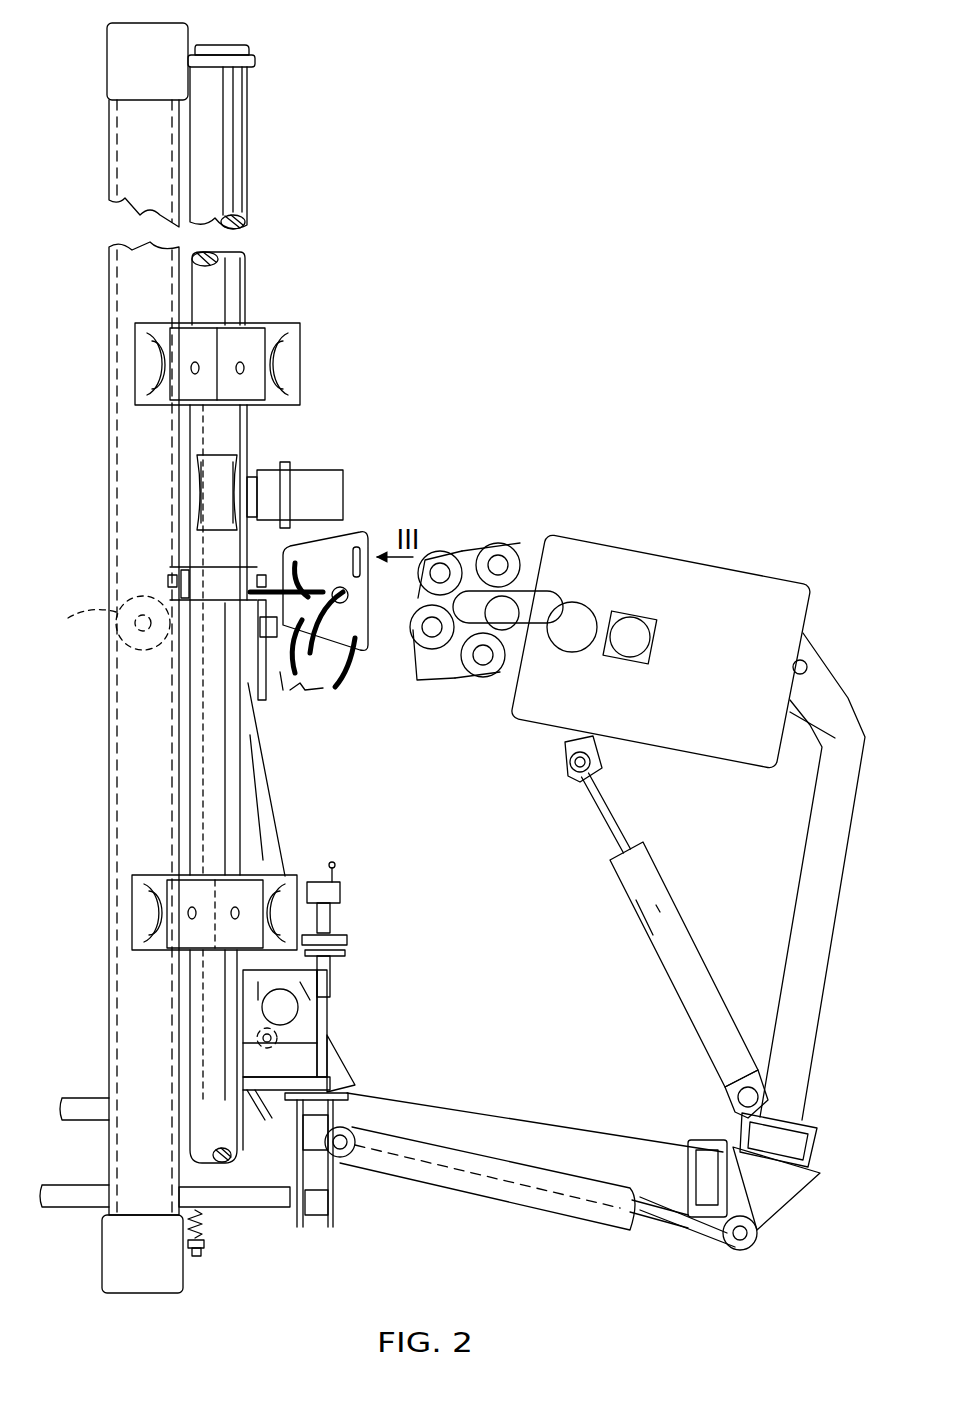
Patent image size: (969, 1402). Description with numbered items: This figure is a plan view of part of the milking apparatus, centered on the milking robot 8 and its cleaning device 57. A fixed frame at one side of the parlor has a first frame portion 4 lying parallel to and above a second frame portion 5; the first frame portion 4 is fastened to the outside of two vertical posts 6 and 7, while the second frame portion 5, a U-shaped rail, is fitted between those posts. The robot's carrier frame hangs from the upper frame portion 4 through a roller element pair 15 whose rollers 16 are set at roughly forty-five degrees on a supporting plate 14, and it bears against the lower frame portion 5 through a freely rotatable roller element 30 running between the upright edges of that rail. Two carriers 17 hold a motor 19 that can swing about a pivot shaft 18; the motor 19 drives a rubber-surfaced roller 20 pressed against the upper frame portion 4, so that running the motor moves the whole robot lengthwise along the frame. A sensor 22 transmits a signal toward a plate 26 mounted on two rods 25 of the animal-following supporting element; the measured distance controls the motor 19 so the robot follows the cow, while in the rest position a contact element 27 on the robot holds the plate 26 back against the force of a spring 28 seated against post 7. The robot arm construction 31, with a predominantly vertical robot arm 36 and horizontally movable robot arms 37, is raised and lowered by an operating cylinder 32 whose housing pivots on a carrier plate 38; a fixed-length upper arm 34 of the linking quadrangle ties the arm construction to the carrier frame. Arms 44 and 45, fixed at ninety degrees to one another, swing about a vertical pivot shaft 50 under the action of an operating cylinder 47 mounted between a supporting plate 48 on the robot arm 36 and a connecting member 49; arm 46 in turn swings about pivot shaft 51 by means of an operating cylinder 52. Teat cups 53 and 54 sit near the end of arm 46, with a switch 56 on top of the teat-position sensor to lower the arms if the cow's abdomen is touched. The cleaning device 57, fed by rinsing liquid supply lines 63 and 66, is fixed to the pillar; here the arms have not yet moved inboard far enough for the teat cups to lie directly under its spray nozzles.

The first frame portion 4 is at (237, 277).
The second frame portion 5 is at (125, 197).
The vertical post 6 is at (137, 42).
The vertical post 7 is at (133, 1275).
The milking robot 8 is at (557, 495).
The carriage block 14 is at (298, 330).
The roller element pair 15 is at (273, 307).
The roller 16 is at (147, 364).
The carrier 17 is at (272, 570).
The pivot shaft 18 is at (170, 578).
The motor 19 is at (323, 482).
The roller 20 is at (212, 492).
The sensor 22 is at (335, 972).
The rod 25 is at (68, 1195).
The plate 26 is at (360, 1098).
The contact element 27 is at (262, 1090).
The spring 28 is at (205, 1240).
The roller element 30 is at (116, 623).
The robot arm construction 31 is at (828, 1072).
The operating cylinder 32 is at (305, 1015).
The upper arm 34 is at (262, 780).
The vertical robot arm 36 is at (190, 1000).
The robot arms 37 is at (558, 934).
The carrier plate 38 is at (327, 985).
The arm 44 is at (560, 1123).
The arm 45 is at (822, 826).
The arm 46 is at (675, 575).
The operating cylinder 47 is at (535, 1197).
The supporting plate 48 is at (340, 1072).
The connecting member 49 is at (775, 1180).
The pivot shaft 50 is at (192, 1040).
The pivot shaft 51 is at (793, 667).
The operating cylinder 52 is at (697, 960).
The teat cup 53 is at (445, 552).
The teat cup 54 is at (500, 548).
The switch 56 is at (530, 612).
The cleaning device 57 is at (323, 1035).
The rinsing liquid supply line 63 is at (330, 548).
The rinsing liquid supply line 66 is at (362, 632).